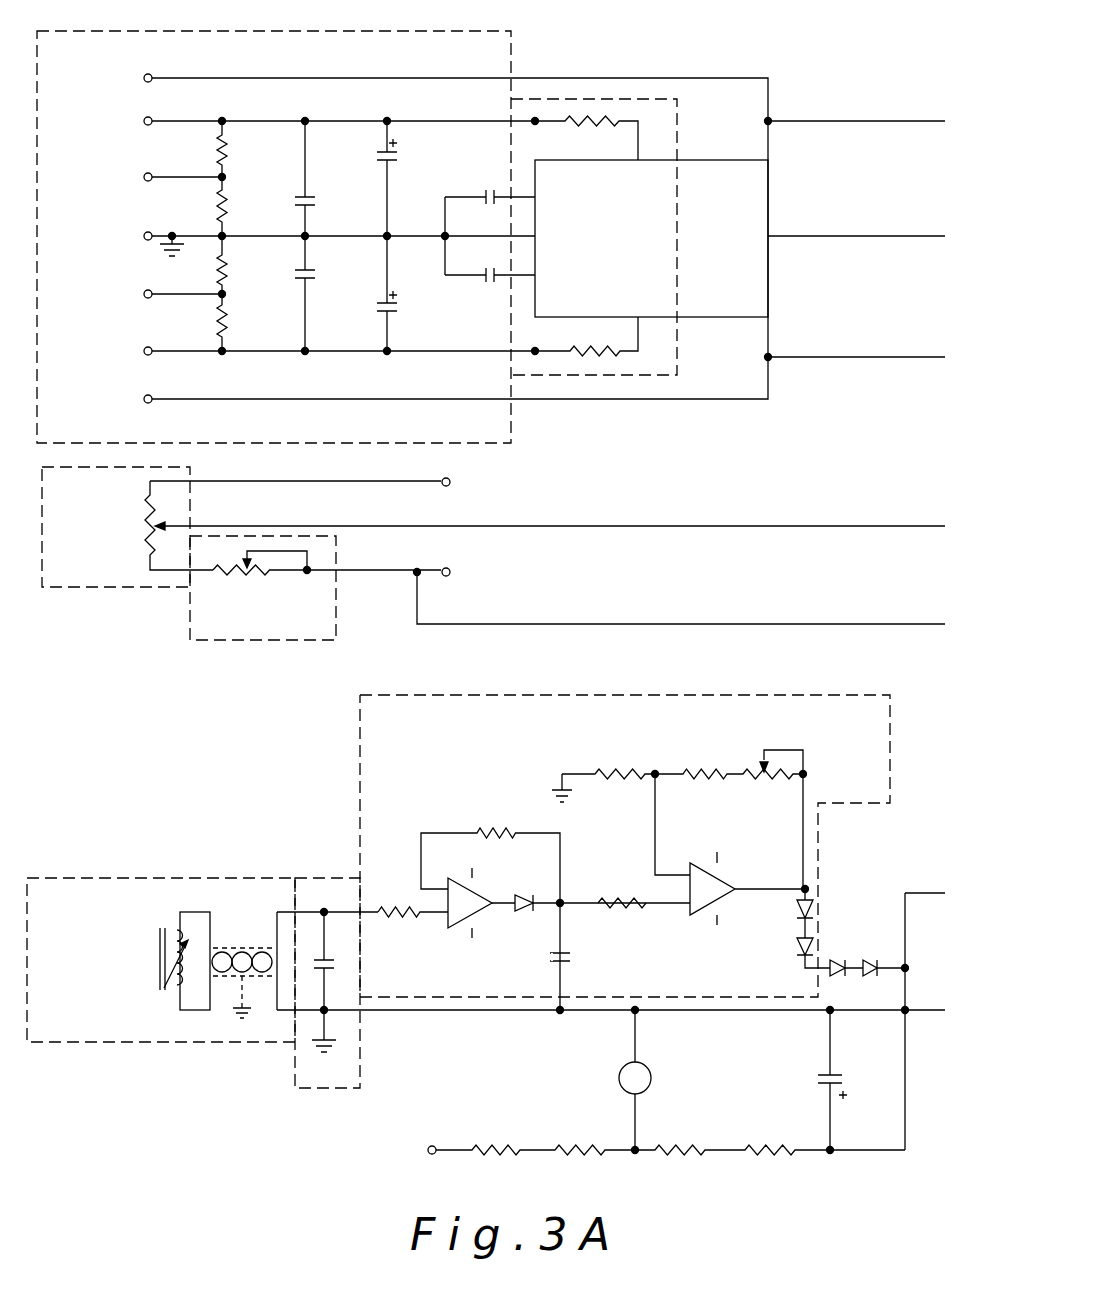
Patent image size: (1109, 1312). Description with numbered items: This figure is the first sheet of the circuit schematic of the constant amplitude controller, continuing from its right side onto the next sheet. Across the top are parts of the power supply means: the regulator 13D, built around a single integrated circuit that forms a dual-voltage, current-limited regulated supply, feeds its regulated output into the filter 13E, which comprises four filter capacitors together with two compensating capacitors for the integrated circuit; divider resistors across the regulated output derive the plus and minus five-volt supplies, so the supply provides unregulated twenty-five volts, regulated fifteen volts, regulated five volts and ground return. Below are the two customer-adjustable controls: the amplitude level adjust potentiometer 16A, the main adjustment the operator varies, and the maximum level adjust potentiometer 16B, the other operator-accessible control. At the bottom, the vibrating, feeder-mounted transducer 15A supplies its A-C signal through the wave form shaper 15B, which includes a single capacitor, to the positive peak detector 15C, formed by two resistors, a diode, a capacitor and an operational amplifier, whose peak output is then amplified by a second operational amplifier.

The filter 13E is at (215, 31).
The regulator 13D is at (677, 153).
The amplitude level adjust potentiometer 16A is at (148, 590).
The maximum level adjust potentiometer 16B is at (232, 641).
The transducer 15A is at (208, 878).
The wave form shaper 15B is at (318, 878).
The positive peak detector 15C is at (568, 695).